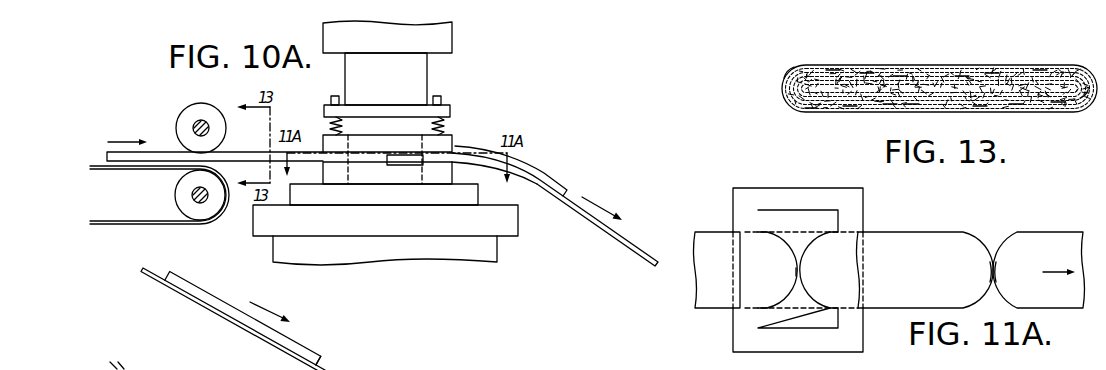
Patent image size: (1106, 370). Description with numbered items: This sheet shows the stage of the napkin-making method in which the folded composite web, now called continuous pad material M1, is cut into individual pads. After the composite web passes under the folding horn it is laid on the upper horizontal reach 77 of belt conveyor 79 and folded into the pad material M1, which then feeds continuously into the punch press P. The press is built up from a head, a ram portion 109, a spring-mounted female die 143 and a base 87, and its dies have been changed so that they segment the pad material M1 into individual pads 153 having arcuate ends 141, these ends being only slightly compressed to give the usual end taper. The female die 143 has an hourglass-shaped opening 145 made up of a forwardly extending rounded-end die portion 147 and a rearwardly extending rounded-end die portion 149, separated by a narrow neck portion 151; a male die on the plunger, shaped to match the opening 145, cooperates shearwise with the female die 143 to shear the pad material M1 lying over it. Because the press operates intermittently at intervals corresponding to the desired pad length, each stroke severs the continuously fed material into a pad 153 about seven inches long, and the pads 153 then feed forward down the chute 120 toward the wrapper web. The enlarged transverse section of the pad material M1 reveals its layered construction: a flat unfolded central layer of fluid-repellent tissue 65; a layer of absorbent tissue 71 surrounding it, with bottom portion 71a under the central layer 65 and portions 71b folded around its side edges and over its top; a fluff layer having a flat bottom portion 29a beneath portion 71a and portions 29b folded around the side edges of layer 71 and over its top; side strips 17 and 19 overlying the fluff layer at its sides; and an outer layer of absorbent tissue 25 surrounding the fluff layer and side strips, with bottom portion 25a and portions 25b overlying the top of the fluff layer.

In FIG. 10A, the continuous pad material M1 is at (166, 152).
In FIG. 13, the continuous pad material M1 is at (784, 63).
In FIG. 11A, the continuous pad material M1 is at (716, 238).
In FIG. 10A, the upper horizontal reach 77 is at (137, 168).
In FIG. 10A, the belt conveyor 79 is at (184, 229).
In FIG. 10A, the punch press P is at (451, 41).
In FIG. 10A, the press ram 109 is at (427, 73).
In FIG. 10A, the female die 143 is at (422, 128).
In FIG. 10A, the press base / die shoe 87 is at (508, 223).
In FIG. 10A, the chute 120 is at (622, 243).
In FIG. 10A, the individual pads 153 is at (549, 178).
In FIG. 11A, the individual pads 153 is at (1030, 226).
In FIG. 10A, the arcuate ends 141 is at (321, 357).
In FIG. 11A, the arcuate ends 141 is at (988, 258).
In FIG. 11A, the hourglass-shaped opening 145 is at (803, 216).
In FIG. 11A, the forwardly extending rounded-end die portion 147 is at (789, 250).
In FIG. 11A, the rearwardly extending rounded-end die portion 149 is at (805, 298).
In FIG. 11A, the narrow neck portion 151 is at (797, 286).
In FIG. 13, the side strip 17 is at (810, 108).
In FIG. 13, the side strip 19 is at (1086, 100).
In FIG. 13, the fluid-repellent tissue layer 65 is at (850, 108).
In FIG. 13, the absorbent tissue layer 71 is at (890, 108).
In FIG. 13, the bottom portion 71a is at (1016, 108).
In FIG. 13, the folded portions 71b is at (900, 68).
In FIG. 13, the absorbent tissue layer 25 is at (980, 108).
In FIG. 13, the bottom portion 25a is at (1058, 106).
In FIG. 13, the overlying portions 25b is at (833, 70).
In FIG. 13, the flat bottom portion 29a is at (912, 106).
In FIG. 13, the folded portions 29b is at (866, 69).